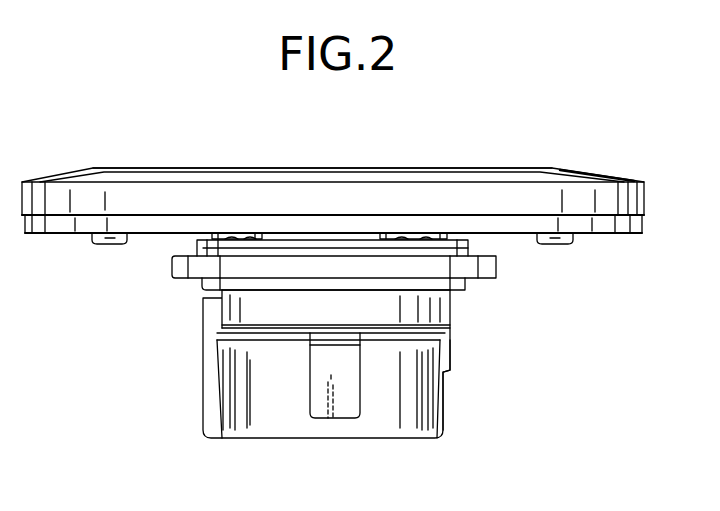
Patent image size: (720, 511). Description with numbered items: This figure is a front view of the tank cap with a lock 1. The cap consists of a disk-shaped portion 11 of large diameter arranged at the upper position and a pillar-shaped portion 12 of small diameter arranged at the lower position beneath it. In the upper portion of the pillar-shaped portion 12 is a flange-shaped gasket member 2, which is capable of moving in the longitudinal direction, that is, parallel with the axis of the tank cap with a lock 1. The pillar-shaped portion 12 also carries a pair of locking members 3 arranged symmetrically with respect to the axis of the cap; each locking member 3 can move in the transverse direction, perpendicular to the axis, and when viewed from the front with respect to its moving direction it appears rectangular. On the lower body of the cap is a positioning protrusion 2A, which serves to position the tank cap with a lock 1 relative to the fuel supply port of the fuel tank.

The tank cap with a lock 1 is at (489, 146).
The disk-shaped portion 11 is at (550, 168).
The gasket member 2 is at (497, 266).
The positioning protrusion 2A is at (212, 395).
The locking member 3 is at (347, 413).
The pillar-shaped portion 12 is at (453, 382).